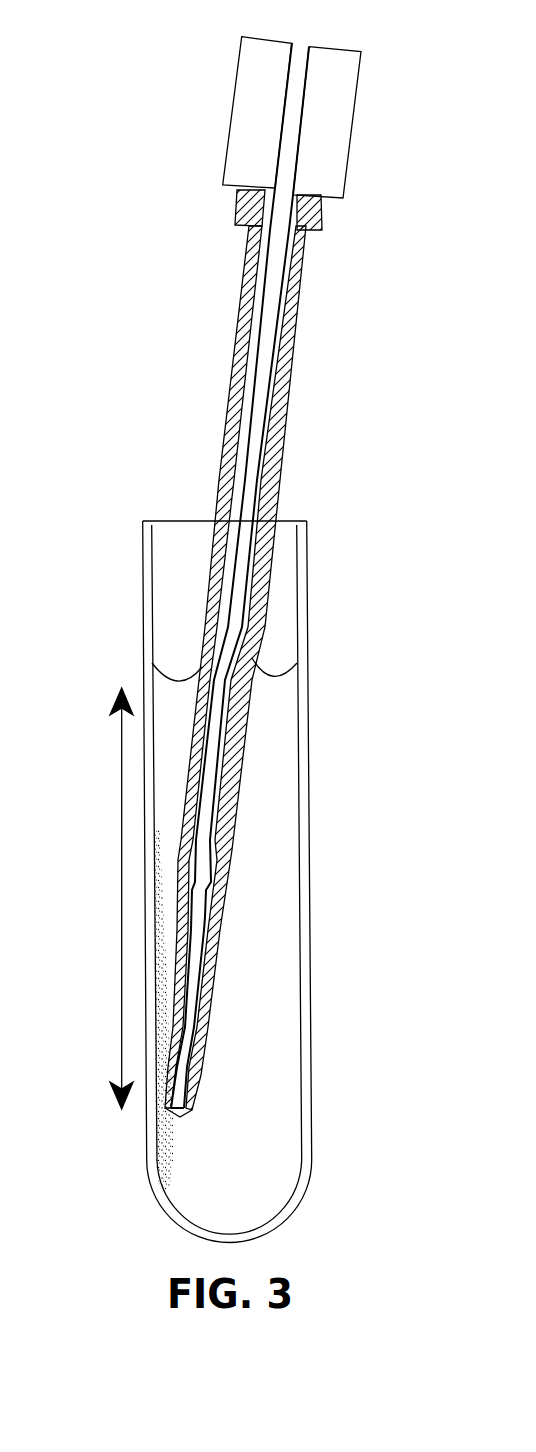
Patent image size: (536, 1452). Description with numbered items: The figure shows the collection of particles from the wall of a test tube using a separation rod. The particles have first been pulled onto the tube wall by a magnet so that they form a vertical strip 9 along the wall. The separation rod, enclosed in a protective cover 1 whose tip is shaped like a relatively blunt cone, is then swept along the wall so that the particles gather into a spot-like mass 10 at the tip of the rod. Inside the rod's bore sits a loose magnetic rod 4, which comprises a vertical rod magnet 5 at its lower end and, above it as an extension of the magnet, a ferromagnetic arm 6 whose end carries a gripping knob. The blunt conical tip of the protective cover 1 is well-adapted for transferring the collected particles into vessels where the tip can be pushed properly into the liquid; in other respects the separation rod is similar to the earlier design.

The protective cover 1 is at (269, 577).
The loose magnetic rod 4 is at (280, 484).
The vertical rod magnet 5 is at (180, 1059).
The ferromagnetic arm 6 is at (252, 373).
The vertical strip 9 is at (173, 1165).
The spot-like mass 10 is at (177, 1133).